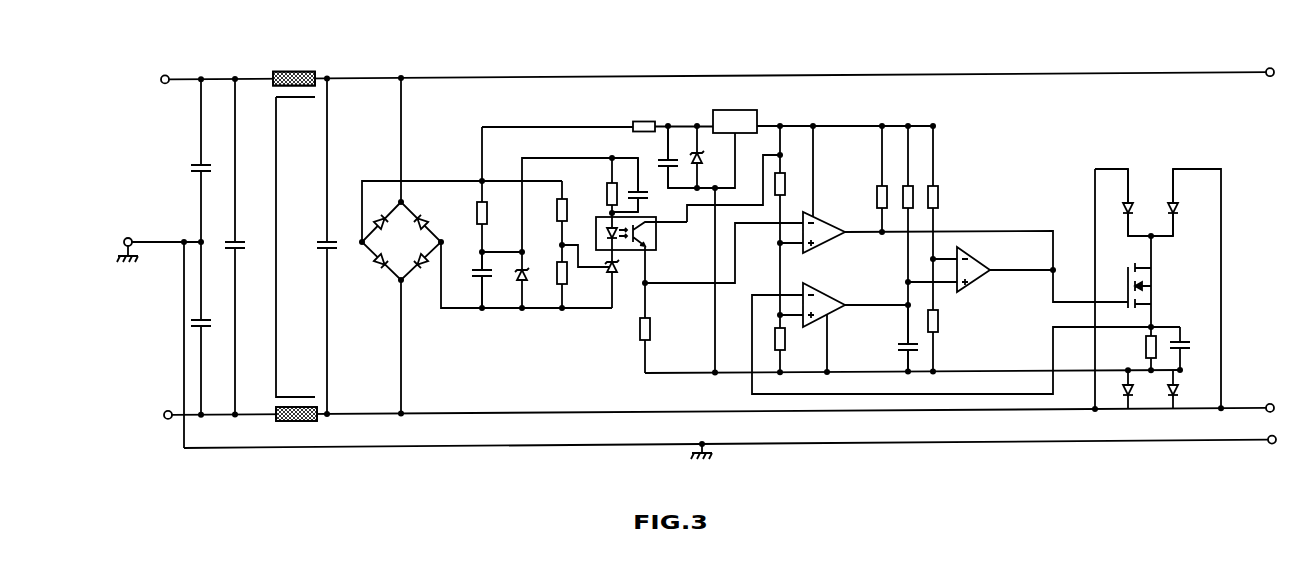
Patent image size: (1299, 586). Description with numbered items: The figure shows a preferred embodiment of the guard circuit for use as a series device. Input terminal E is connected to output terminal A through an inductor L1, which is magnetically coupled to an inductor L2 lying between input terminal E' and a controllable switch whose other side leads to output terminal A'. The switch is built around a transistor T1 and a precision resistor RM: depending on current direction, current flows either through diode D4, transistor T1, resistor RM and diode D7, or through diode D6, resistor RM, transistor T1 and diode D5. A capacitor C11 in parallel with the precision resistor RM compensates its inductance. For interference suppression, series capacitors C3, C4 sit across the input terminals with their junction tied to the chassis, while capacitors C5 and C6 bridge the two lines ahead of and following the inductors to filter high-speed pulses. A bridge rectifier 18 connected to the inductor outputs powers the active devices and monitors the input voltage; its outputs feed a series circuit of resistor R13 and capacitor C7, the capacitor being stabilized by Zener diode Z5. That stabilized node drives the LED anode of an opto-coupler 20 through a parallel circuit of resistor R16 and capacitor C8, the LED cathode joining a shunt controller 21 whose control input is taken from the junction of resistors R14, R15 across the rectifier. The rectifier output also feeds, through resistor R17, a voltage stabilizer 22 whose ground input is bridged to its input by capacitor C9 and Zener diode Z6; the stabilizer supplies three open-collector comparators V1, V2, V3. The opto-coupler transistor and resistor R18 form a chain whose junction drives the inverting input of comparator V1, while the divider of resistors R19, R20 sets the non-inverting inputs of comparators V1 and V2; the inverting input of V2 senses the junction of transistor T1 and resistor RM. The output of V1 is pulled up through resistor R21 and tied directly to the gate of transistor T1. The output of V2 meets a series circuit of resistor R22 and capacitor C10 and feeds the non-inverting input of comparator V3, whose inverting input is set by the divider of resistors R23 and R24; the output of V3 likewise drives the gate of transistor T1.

The bridge rectifier 18 is at (401, 241).
The opto-coupler 20 is at (656, 243).
The shunt controller 21 is at (623, 279).
The voltage stabilizer 22 is at (737, 110).
The input terminal E is at (156, 81).
The input terminal E' is at (157, 415).
The output terminal A is at (1280, 74).
The output terminal A' is at (1282, 409).
The inductor L1 is at (294, 66).
The inductor L2 is at (296, 428).
The capacitor C3 is at (211, 160).
The capacitor C4 is at (211, 328).
The capacitor C5 is at (246, 247).
The capacitor C6 is at (334, 246).
The capacitor C7 is at (473, 280).
The capacitor C8 is at (650, 185).
The capacitor C9 is at (661, 157).
The capacitor C10 is at (893, 338).
The capacitor C11 is at (1193, 348).
The resistor R13 is at (495, 217).
The resistor R14 is at (575, 213).
The resistor R15 is at (575, 276).
The resistor R16 is at (599, 187).
The resistor R17 is at (641, 109).
The resistor R18 is at (660, 328).
The resistor R19 is at (794, 184).
The resistor R20 is at (795, 307).
The resistor R21 is at (872, 179).
The resistor R22 is at (898, 249).
The resistor R23 is at (944, 192).
The resistor R24 is at (947, 315).
The precision resistor RM is at (1136, 348).
The Zener diode Z5 is at (514, 280).
The Zener diode Z6 is at (708, 157).
The first comparator V1 is at (811, 214).
The second comparator V2 is at (828, 297).
The third comparator V3 is at (977, 283).
The diode D4 is at (1138, 202).
The diode D5 is at (1183, 202).
The diode D6 is at (1140, 389).
The diode D7 is at (1185, 389).
The transistor T1 is at (1154, 285).